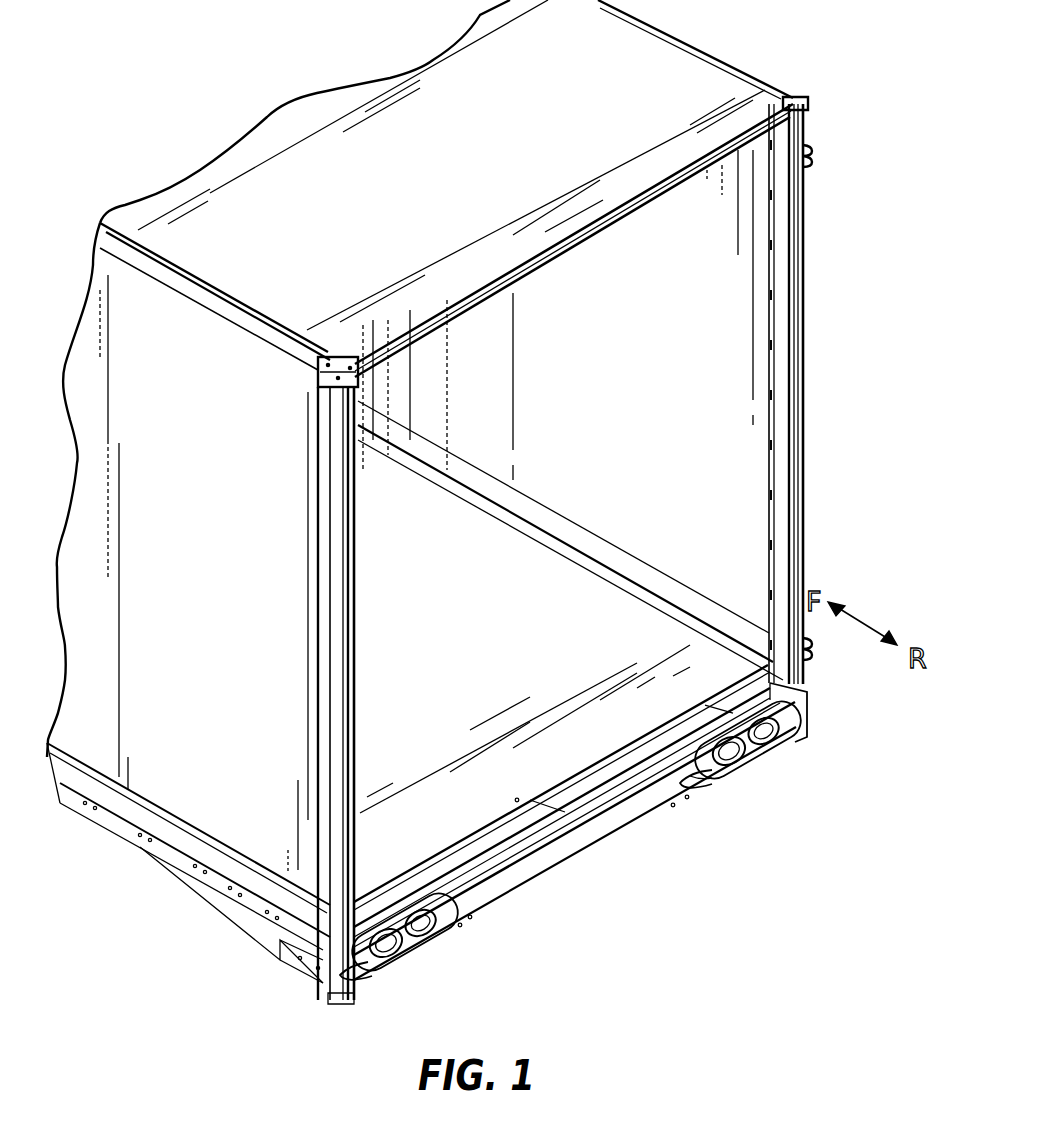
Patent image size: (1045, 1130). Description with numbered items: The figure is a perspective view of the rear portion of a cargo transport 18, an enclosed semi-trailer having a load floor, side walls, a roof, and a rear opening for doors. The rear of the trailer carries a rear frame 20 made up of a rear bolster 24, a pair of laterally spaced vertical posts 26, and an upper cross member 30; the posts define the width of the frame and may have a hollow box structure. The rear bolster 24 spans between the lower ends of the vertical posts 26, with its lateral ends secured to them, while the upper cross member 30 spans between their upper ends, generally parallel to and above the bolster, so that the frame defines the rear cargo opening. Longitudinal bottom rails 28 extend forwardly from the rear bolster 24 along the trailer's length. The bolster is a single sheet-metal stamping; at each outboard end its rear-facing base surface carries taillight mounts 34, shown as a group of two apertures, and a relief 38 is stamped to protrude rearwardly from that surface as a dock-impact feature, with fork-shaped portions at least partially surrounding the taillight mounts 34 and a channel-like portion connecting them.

The cargo transport 18 is at (245, 66).
The rear frame 20 is at (818, 186).
The rear bolster 24 is at (595, 847).
The vertical posts 26 is at (800, 271).
The longitudinal bottom rails 28 is at (175, 863).
The upper cross member 30 is at (630, 192).
The taillight mounts 34 is at (420, 957).
The relief 38 is at (710, 790).